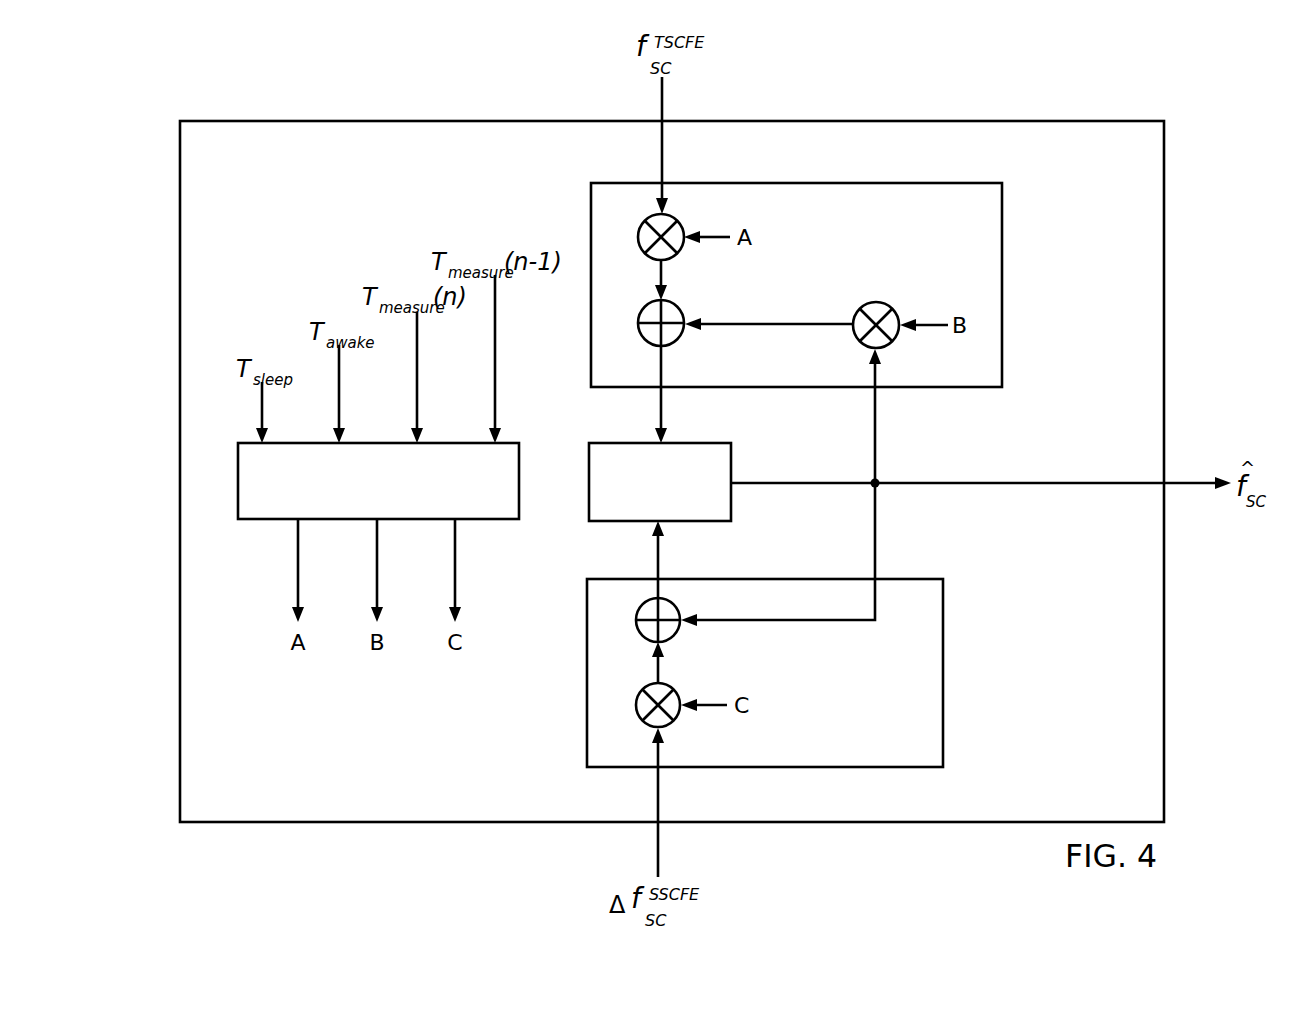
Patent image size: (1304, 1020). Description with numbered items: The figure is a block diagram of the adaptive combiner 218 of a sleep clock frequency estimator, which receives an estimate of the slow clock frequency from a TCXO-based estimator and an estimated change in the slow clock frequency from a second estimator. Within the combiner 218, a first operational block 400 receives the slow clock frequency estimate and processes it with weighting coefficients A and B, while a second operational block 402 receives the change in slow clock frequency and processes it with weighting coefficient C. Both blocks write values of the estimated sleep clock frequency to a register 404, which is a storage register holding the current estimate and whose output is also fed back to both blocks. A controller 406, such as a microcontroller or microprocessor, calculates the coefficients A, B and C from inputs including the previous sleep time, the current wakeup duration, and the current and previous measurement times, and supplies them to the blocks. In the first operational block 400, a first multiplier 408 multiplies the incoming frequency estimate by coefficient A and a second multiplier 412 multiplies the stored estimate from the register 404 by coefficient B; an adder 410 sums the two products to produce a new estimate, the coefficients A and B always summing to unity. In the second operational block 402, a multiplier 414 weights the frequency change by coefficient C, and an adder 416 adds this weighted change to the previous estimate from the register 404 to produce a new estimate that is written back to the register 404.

The adaptive combiner 218 is at (921, 121).
The first operational block 400 is at (806, 183).
The second operational block 402 is at (943, 604).
The register 404 is at (696, 443).
The controller 406 is at (258, 521).
The first multiplier 408 is at (673, 256).
The adder 410 is at (673, 342).
The second multiplier 412 is at (872, 303).
The multiplier 414 is at (670, 724).
The adder 416 is at (670, 639).